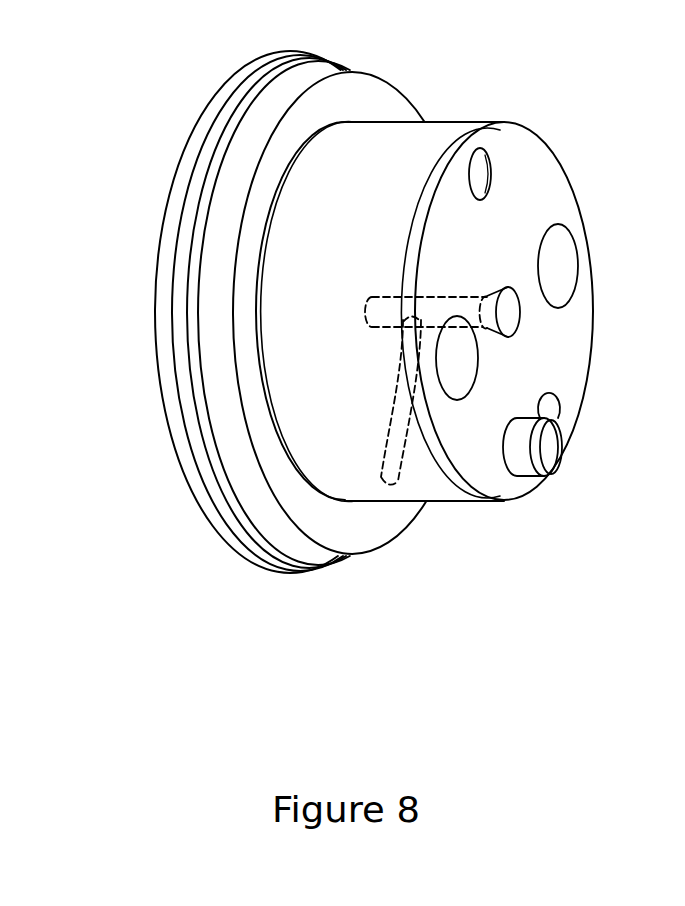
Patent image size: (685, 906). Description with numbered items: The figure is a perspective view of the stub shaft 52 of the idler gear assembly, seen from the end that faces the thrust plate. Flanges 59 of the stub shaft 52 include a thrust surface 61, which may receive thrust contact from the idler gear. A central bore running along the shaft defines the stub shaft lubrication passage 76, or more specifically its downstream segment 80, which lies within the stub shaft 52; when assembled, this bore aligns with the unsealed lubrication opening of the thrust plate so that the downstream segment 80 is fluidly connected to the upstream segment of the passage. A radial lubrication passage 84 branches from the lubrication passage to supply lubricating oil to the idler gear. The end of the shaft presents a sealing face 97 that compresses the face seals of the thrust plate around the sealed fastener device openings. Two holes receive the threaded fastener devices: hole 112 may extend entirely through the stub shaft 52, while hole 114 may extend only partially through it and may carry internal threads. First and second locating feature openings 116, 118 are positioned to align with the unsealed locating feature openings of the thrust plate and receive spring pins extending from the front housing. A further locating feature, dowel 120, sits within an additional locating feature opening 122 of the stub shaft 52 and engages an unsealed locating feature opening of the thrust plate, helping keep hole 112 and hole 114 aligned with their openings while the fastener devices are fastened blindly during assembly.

The stub shaft 52 is at (449, 52).
The flanges 59 is at (327, 535).
The thrust surface 61 is at (292, 517).
The stub shaft lubrication passage 76 is at (512, 311).
The downstream segment 80 is at (443, 306).
The radial lubrication passage 84 is at (402, 457).
The sealing face 97 is at (550, 207).
The hole 112 is at (557, 265).
The hole 114 is at (457, 383).
The first locating feature opening 116 is at (487, 163).
The second locating feature opening 118 is at (553, 410).
The dowel 120 is at (552, 448).
The additional locating feature opening 122 is at (503, 447).